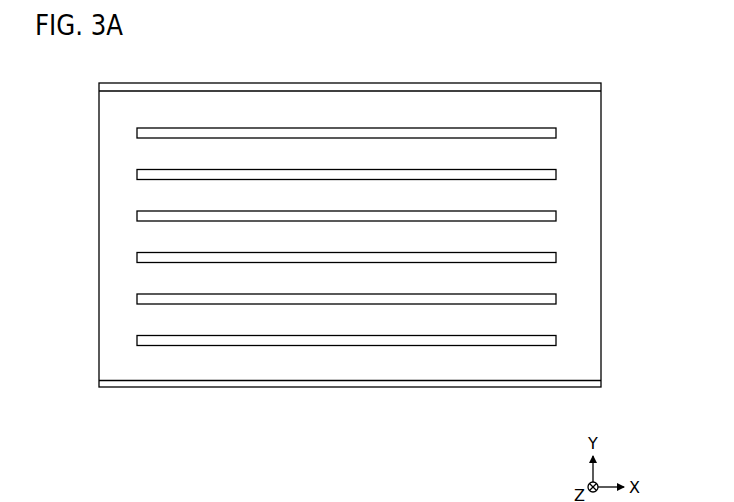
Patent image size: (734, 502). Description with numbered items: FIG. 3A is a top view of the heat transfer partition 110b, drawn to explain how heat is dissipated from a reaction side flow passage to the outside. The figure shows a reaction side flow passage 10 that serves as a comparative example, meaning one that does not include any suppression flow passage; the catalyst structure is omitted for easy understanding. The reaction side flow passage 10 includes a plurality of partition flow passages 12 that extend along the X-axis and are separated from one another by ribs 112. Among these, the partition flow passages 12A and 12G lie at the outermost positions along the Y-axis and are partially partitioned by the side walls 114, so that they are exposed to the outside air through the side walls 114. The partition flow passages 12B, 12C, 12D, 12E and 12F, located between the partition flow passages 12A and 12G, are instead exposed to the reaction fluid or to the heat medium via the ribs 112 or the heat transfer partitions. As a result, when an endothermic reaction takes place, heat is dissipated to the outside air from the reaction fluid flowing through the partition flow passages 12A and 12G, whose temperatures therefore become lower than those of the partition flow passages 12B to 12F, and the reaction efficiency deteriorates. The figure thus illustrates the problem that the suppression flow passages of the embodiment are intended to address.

The reaction side flow passage 10 is at (393, 234).
The partition flow passages 12 is at (350, 236).
The partition flow passage 12A is at (462, 120).
The partition flow passage 12B is at (462, 162).
The partition flow passage 12C is at (462, 204).
The partition flow passage 12D is at (462, 245).
The partition flow passage 12E is at (462, 286).
The partition flow passage 12F is at (462, 328).
The partition flow passage 12G is at (462, 370).
The heat transfer partition 110b is at (590, 110).
The ribs 112 is at (520, 304).
The side walls 114 is at (537, 84).